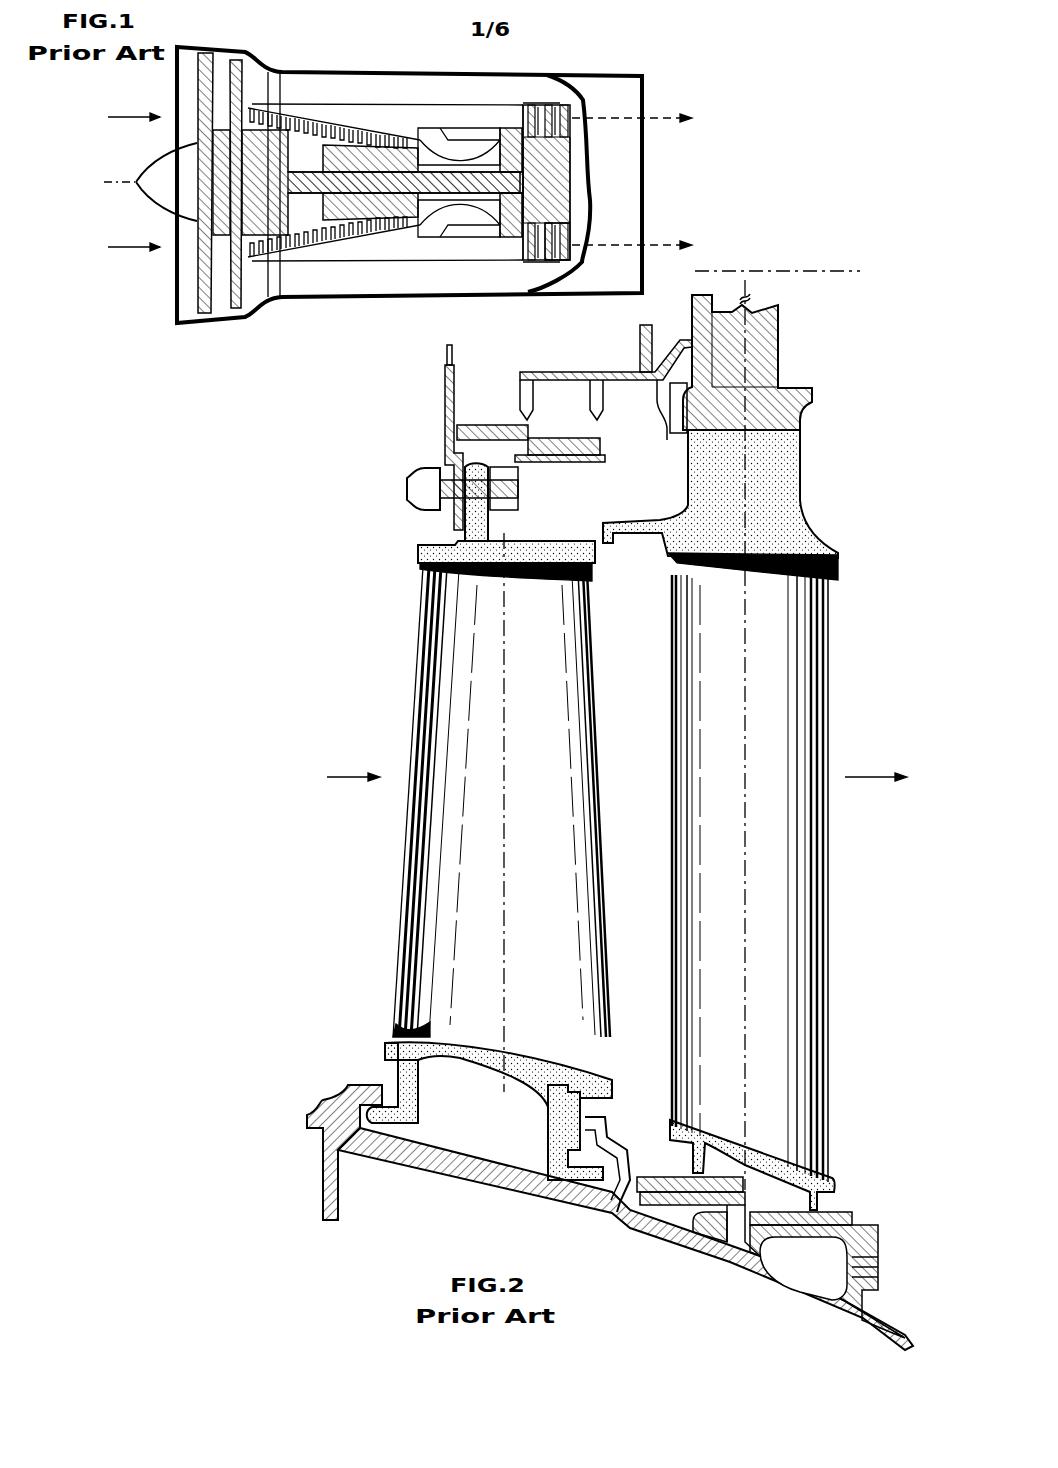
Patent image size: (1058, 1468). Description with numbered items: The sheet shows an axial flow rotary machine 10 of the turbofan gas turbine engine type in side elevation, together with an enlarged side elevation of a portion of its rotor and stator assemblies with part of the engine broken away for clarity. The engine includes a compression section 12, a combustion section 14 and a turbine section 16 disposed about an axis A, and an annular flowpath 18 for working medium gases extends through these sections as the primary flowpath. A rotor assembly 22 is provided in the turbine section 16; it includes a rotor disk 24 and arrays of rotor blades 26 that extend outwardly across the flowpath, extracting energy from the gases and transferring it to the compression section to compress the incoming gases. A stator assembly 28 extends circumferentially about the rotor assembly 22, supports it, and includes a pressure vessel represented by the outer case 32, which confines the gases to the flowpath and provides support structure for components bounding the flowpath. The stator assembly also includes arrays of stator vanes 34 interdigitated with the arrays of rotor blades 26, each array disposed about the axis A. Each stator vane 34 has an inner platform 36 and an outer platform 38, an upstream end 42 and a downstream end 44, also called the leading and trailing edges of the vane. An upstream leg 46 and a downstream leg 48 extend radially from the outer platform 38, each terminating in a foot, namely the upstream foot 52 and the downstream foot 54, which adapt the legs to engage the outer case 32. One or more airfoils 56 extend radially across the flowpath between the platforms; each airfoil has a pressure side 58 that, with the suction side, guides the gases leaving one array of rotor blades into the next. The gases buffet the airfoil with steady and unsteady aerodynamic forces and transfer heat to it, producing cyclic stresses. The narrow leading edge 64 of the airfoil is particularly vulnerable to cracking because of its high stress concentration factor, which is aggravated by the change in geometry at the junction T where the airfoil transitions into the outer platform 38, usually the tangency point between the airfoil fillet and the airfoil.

In FIG. 1, the axial flow rotary machine 10 is at (320, 50).
In FIG. 1, the compression section 12 is at (288, 128).
In FIG. 1, the combustion section 14 is at (462, 134).
In FIG. 1, the turbine section 16 is at (531, 106).
In FIG. 1, the annular flowpath 18 is at (137, 118).
In FIG. 2, the annular flowpath 18 is at (358, 776).
In FIG. 1, the rotor assembly 22 is at (488, 192).
In FIG. 2, the rotor assembly 22 is at (818, 517).
In FIG. 2, the rotor disk 24 is at (765, 357).
In FIG. 1, the rotor blades 26 is at (548, 240).
In FIG. 2, the rotor blades 26 is at (742, 756).
In FIG. 1, the stator assembly 28 is at (532, 258).
In FIG. 2, the stator assembly 28 is at (286, 1129).
In FIG. 2, the outer case 32 is at (472, 1168).
In FIG. 2, the stator vane 34 is at (545, 683).
In FIG. 2, the inner platform 36 is at (485, 540).
In FIG. 2, the outer platform 38 is at (560, 1048).
In FIG. 2, the upstream end 42 is at (430, 545).
In FIG. 2, the downstream end 44 is at (598, 548).
In FIG. 2, the upstream leg 46 is at (412, 1093).
In FIG. 2, the downstream leg 48 is at (548, 1122).
In FIG. 2, the upstream foot 52 is at (372, 1118).
In FIG. 2, the downstream foot 54 is at (590, 1170).
In FIG. 2, the airfoil 56 is at (478, 823).
In FIG. 2, the pressure side 58 is at (536, 756).
In FIG. 2, the leading edge 64 is at (422, 706).
In FIG. 2, the junction T is at (397, 1032).
In FIG. 1, the axis A is at (110, 183).
In FIG. 2, the axis A is at (789, 726).